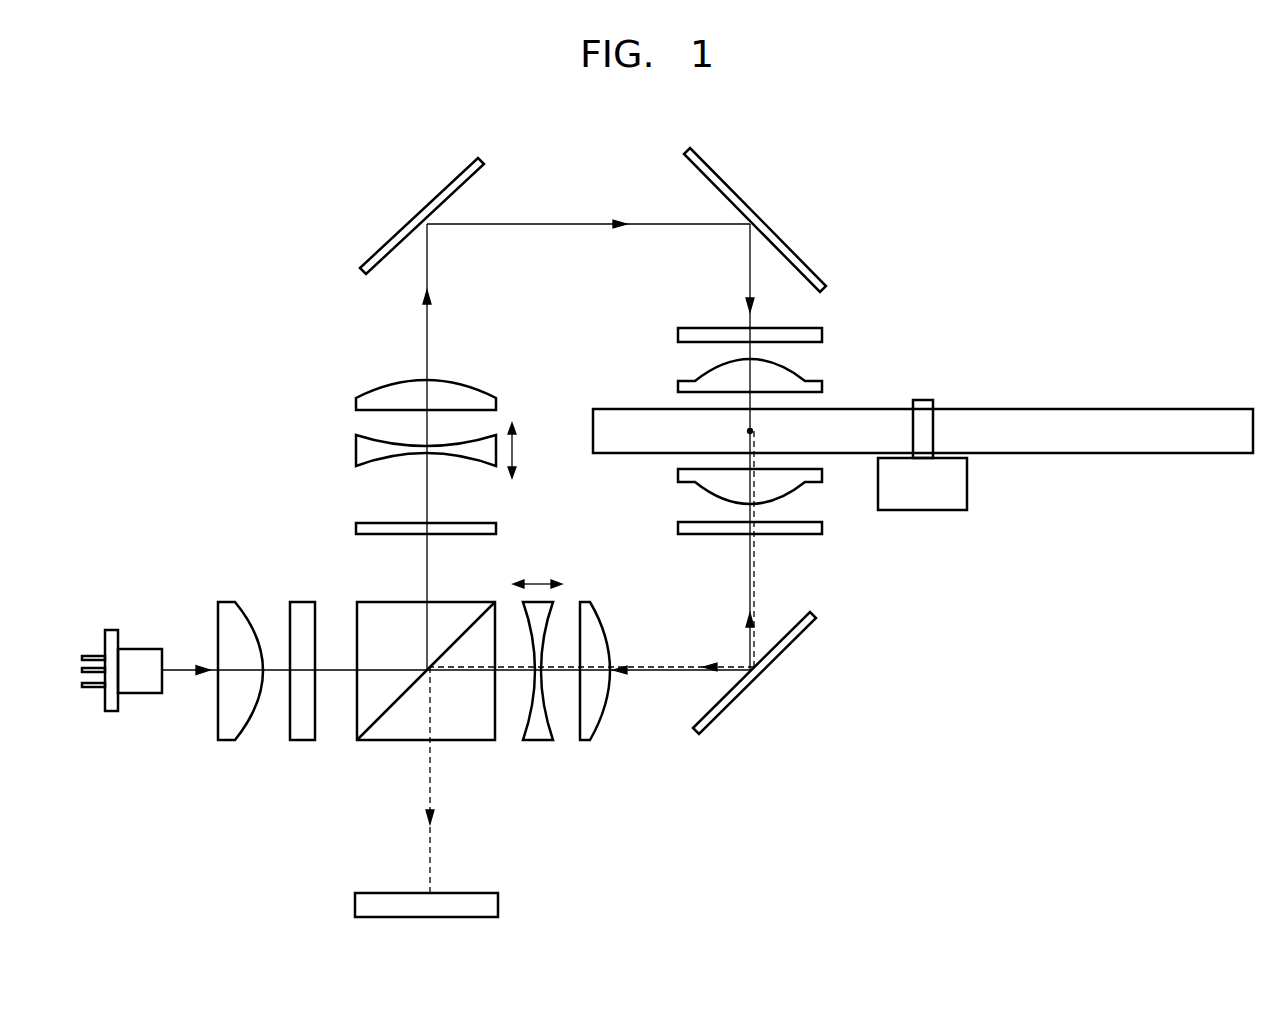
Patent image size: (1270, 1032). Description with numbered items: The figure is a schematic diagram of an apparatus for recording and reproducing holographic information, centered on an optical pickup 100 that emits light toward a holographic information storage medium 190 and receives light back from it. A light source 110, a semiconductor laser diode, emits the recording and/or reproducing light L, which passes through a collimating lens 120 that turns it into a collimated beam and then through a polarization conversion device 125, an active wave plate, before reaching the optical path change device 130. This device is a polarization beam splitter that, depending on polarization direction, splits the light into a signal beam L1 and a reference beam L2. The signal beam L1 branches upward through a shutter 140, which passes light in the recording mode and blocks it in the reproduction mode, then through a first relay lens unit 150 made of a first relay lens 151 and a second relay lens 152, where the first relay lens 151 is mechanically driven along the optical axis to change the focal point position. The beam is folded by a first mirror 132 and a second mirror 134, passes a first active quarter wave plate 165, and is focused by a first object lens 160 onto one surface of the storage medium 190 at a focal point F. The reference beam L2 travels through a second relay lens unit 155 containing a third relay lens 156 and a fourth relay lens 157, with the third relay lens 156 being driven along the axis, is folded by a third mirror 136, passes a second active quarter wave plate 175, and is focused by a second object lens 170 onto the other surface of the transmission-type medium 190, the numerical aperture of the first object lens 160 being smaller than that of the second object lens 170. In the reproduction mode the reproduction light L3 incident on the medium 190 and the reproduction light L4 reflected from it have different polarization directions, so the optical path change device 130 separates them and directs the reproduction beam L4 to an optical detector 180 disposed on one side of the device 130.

The optical pickup 100 is at (1038, 195).
The light source 110 is at (110, 712).
The collimating lens 120 is at (230, 742).
The polarization conversion device 125 is at (300, 742).
The optical path change device 130 is at (380, 742).
The first mirror 132 is at (450, 178).
The second mirror 134 is at (806, 258).
The third mirror 136 is at (790, 645).
The shutter 140 is at (354, 527).
The first relay lens unit 150 is at (364, 429).
The first relay lens 151 is at (386, 450).
The second relay lens 152 is at (354, 402).
The second relay lens unit 155 is at (561, 717).
The third relay lens 156 is at (538, 742).
The fourth relay lens 157 is at (588, 706).
The first object lens 160 is at (676, 386).
The first active quarter wave plate 165 is at (676, 334).
The second object lens 170 is at (676, 478).
The second active quarter wave plate 175 is at (676, 529).
The optical detector 180 is at (354, 906).
The holographic information storage medium 190 is at (1175, 408).
The recording and/or reproducing light L is at (188, 672).
The signal beam L1 is at (424, 333).
The reference beam L2 is at (553, 718).
The reproduction light incident on the medium L3 is at (652, 672).
The reproduction beam L4 is at (682, 665).
The focus F is at (753, 431).